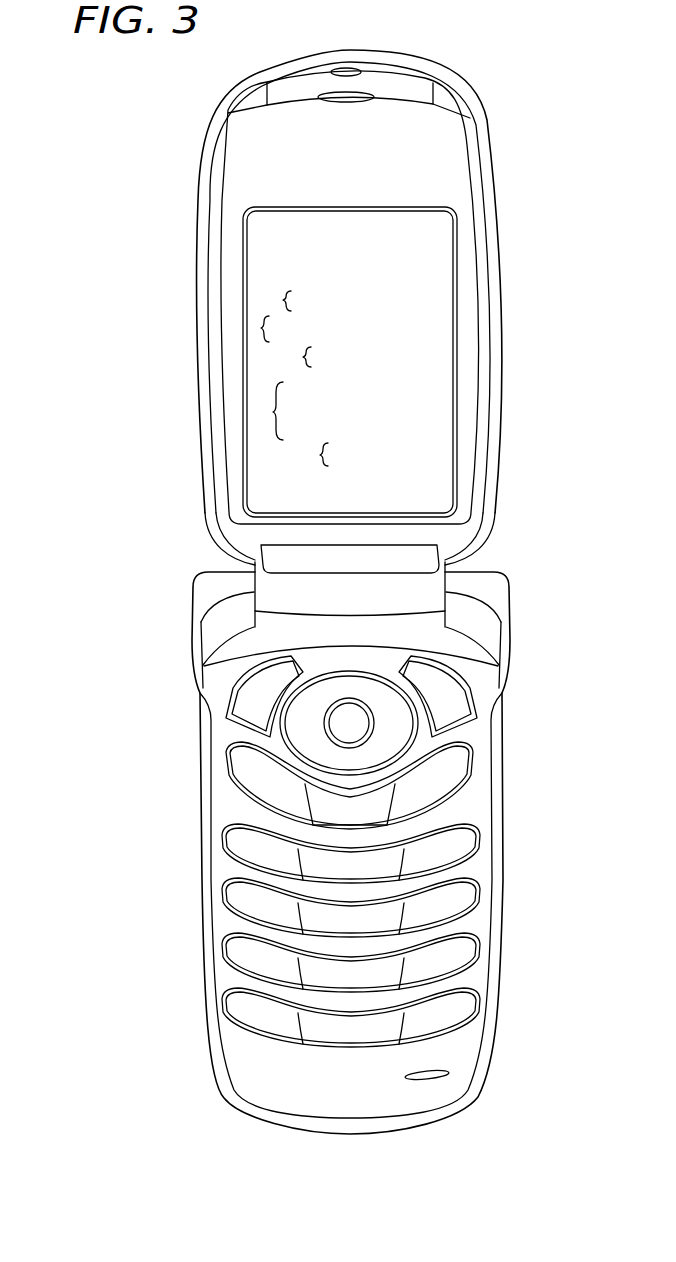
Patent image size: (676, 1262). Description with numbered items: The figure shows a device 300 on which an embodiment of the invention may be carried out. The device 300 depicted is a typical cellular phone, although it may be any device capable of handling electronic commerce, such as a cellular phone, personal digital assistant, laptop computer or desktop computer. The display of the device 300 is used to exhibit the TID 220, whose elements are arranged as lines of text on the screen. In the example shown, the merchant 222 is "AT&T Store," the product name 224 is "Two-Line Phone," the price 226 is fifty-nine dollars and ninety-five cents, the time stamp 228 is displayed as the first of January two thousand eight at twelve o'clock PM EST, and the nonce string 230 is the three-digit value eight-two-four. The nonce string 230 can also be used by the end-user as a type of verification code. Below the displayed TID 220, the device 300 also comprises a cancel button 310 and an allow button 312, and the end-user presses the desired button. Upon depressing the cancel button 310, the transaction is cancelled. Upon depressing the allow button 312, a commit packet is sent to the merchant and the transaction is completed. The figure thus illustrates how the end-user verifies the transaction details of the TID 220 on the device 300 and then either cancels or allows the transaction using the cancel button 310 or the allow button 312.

The TID 220 is at (98, 280).
The merchant 222 is at (283, 298).
The product name 224 is at (261, 328).
The price 226 is at (303, 357).
The time stamp 228 is at (273, 412).
The nonce string 230 is at (320, 455).
The device 300 is at (188, 853).
The cancel button 310 is at (242, 694).
The allow button 312 is at (458, 697).